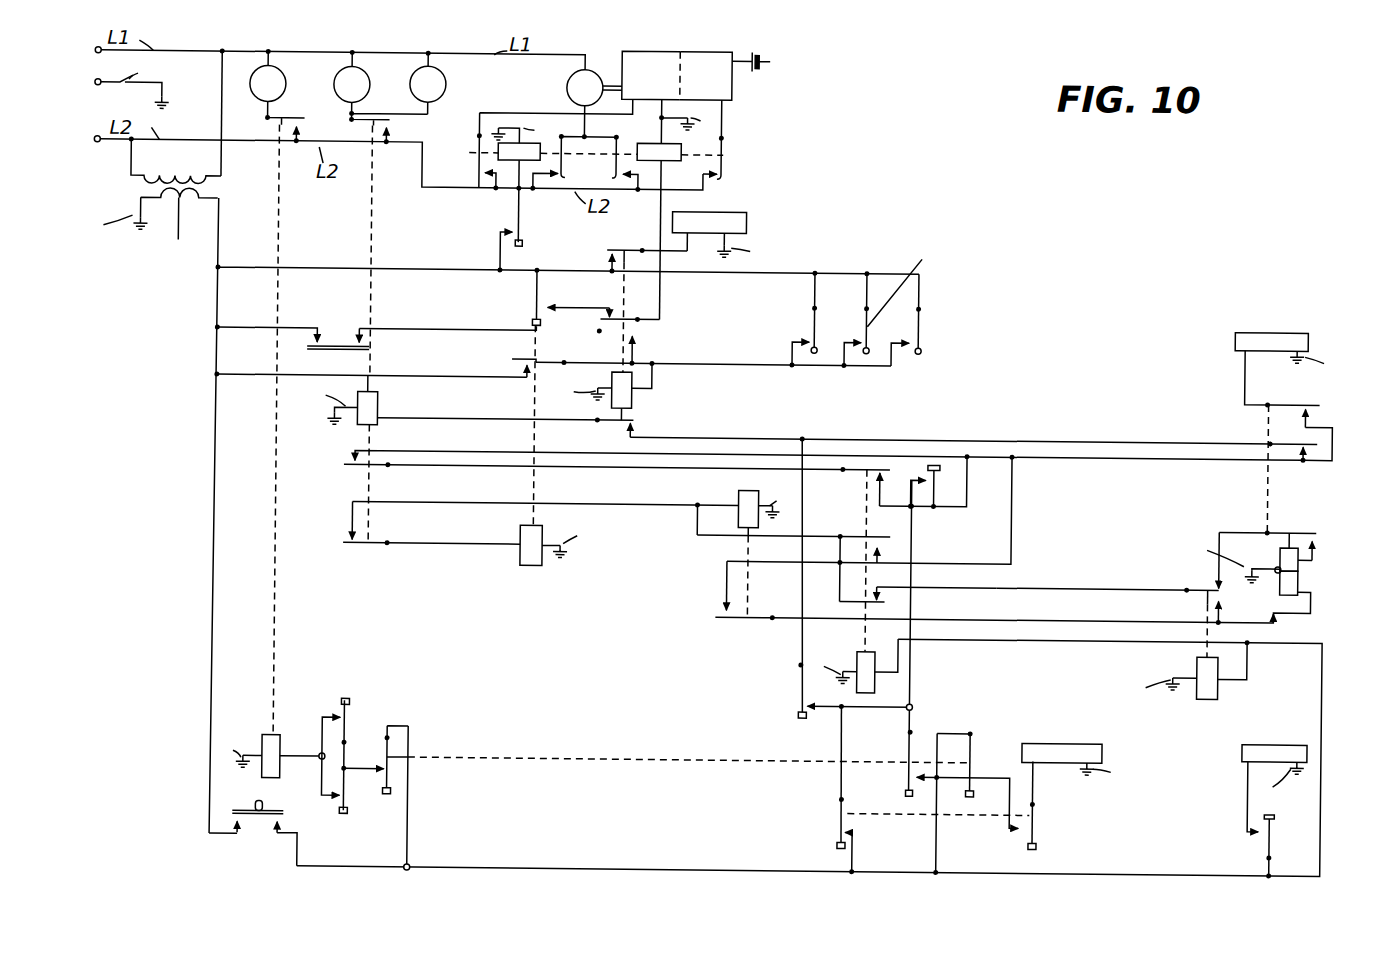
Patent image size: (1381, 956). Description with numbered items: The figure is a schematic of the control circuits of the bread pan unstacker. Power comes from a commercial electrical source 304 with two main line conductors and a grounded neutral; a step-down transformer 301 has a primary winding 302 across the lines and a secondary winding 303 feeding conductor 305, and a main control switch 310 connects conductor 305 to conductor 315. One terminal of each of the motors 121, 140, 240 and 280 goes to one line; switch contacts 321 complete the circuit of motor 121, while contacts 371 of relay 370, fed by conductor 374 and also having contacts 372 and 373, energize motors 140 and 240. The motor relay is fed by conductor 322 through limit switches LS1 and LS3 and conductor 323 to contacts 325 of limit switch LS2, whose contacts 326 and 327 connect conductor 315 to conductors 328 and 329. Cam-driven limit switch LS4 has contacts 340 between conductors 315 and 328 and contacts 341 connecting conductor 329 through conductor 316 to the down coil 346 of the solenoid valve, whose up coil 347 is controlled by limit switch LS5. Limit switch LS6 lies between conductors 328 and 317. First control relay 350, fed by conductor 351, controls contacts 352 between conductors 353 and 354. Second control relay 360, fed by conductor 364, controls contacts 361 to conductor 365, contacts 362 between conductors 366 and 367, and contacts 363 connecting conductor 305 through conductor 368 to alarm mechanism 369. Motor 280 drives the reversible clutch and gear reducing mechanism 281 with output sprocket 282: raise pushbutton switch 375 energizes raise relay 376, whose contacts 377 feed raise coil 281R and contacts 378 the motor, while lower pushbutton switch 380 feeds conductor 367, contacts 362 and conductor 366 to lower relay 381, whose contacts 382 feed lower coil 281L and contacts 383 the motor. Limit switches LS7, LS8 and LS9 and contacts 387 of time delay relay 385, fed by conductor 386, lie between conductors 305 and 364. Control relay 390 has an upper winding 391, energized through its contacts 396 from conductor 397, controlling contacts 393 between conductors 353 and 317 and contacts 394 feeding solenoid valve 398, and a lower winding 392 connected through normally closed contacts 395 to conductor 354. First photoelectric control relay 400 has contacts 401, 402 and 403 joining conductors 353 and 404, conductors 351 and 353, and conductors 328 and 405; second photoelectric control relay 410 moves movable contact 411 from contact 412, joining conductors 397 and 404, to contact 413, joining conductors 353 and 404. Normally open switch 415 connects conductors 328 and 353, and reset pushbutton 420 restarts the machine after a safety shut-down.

The motor 121 is at (262, 61).
The motor 140 is at (347, 62).
The lower discharge conveyor motor 240 is at (423, 63).
The motor 280 is at (565, 83).
The reversible clutch and gear reducing mechanism 281 is at (656, 66).
The raise coil 281R is at (621, 60).
The lower coil 281L is at (672, 40).
The output sprocket 282 is at (770, 57).
The step-down transformer 301 is at (134, 199).
The primary winding 302 is at (189, 172).
The secondary winding 303 is at (88, 193).
The electrical source 304 is at (100, 97).
The conductor 305 is at (219, 230).
The main control switch 310 is at (262, 826).
The conductor 315 is at (416, 790).
The conductor 316 is at (1040, 768).
The conductor 317 is at (806, 433).
The switch contacts 321 is at (298, 125).
The conductor 322 is at (297, 752).
The conductor 323 is at (357, 760).
The contacts 325 is at (386, 756).
The switch contacts 326 is at (922, 766).
The switch contacts 327 is at (977, 768).
The conductor 328 is at (844, 740).
The conductor 329 is at (1010, 797).
The switch contacts 340 is at (836, 812).
The switch contacts 341 is at (1021, 836).
The down coil 346 is at (1052, 735).
The up coil 347 is at (1280, 733).
The first control relay 350 is at (736, 484).
The conductor 351 is at (413, 500).
The switch contacts 352 is at (714, 605).
The conductor 353 is at (466, 449).
The conductor 354 is at (786, 616).
The second control relay 360 is at (640, 392).
The switch contacts 361 is at (641, 351).
The switch contacts 362 is at (645, 316).
The switch contacts 363 is at (606, 247).
The conductor 364 is at (745, 359).
The conductor 365 is at (440, 327).
The conductor 366 is at (661, 296).
The conductor 367 is at (570, 304).
The conductor 368 is at (680, 246).
The alarm mechanism 369 is at (737, 207).
The relay 370 is at (358, 424).
The switch contacts 371 is at (395, 126).
The switch contacts 372 is at (348, 470).
The switch contacts 373 is at (348, 538).
The conductor 374 is at (432, 416).
The raise pushbutton switch 375 is at (507, 221).
The raise relay 376 is at (497, 152).
The switch contacts 377 is at (482, 180).
The switch contacts 378 is at (553, 194).
The lower pushbutton switch 380 is at (528, 300).
The lower relay 381 is at (724, 155).
The switch contacts 382 is at (721, 174).
The switch contacts 383 is at (622, 182).
The time delay relay 385 is at (520, 553).
The conductor 386 is at (433, 541).
The switch contacts 387 is at (510, 358).
The control relay 390 is at (1269, 578).
The upper winding 391 is at (1283, 545).
The lower winding 392 is at (1275, 608).
The switch contacts 393 is at (1309, 456).
The switch contacts 394 is at (1312, 410).
The switch contacts 395 is at (1280, 612).
The switch contacts 396 is at (1318, 528).
The conductor 397 is at (1252, 520).
The solenoid valve 398 is at (1245, 321).
The first photoelectric control relay 400 is at (860, 650).
The switch contacts 401 is at (892, 596).
The switch contacts 402 is at (896, 533).
The switch contacts 403 is at (877, 470).
The conductor 404 is at (1030, 580).
The conductor 405 is at (630, 466).
The second photoelectric control relay 410 is at (1203, 693).
The movable switch contact 411 is at (1188, 578).
The switch contact 412 is at (1220, 573).
The switch contact 413 is at (1208, 593).
The switch 415 is at (919, 466).
The reset pushbutton 420 is at (334, 316).
The limit switch LS1 is at (343, 813).
The limit switch LS2 is at (378, 783).
The limit switch LS3 is at (344, 697).
The limit switch LS4 is at (814, 818).
The limit switch LS5 is at (1260, 831).
The limit switch LS6 is at (801, 697).
The limit switch LS7 is at (807, 320).
The limit switch LS8 is at (900, 300).
The limit switch LS9 is at (923, 318).